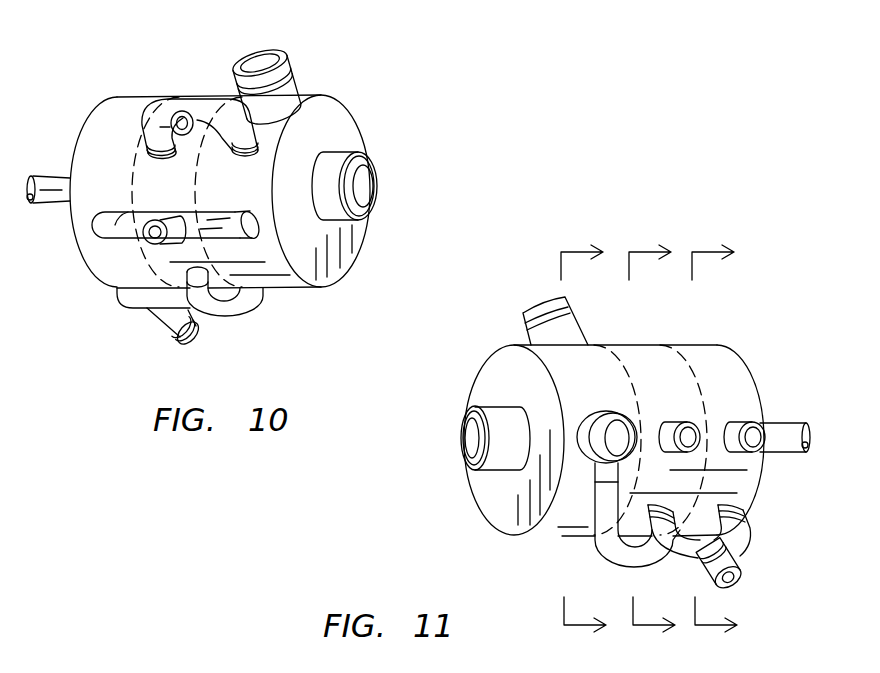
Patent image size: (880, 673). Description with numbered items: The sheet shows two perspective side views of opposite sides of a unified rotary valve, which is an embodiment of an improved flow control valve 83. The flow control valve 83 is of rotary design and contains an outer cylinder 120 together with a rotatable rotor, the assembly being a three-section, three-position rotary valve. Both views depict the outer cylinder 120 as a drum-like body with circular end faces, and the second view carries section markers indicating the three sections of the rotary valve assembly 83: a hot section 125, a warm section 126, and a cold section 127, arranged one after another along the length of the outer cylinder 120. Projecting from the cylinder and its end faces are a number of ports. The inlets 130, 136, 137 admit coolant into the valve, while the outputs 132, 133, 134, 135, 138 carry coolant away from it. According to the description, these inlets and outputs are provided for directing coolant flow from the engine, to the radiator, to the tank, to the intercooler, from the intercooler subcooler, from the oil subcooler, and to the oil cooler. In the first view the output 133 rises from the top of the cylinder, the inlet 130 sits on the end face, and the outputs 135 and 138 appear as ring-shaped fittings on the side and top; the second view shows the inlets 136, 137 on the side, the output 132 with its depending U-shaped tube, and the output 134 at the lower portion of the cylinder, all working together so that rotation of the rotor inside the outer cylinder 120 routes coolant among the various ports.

In FIG. 10, the flow control valve 83 is at (414, 72).
In FIG. 11, the flow control valve 83 is at (468, 330).
In FIG. 10, the outer cylinder 120 is at (115, 96).
In FIG. 11, the outer cylinder 120 is at (637, 440).
In FIG. 11, the hot section 125 is at (560, 252).
In FIG. 11, the warm section 126 is at (629, 252).
In FIG. 11, the cold section 127 is at (692, 252).
In FIG. 10, the inlet 130 is at (365, 180).
In FIG. 11, the inlet 130 is at (495, 438).
In FIG. 11, the output 132 is at (600, 540).
In FIG. 10, the output 133 is at (278, 52).
In FIG. 11, the output 133 is at (555, 321).
In FIG. 11, the output 134 is at (735, 572).
In FIG. 10, the output 135 is at (155, 238).
In FIG. 11, the inlet 136 is at (686, 424).
In FIG. 11, the inlet 137 is at (752, 430).
In FIG. 10, the output 138 is at (188, 115).